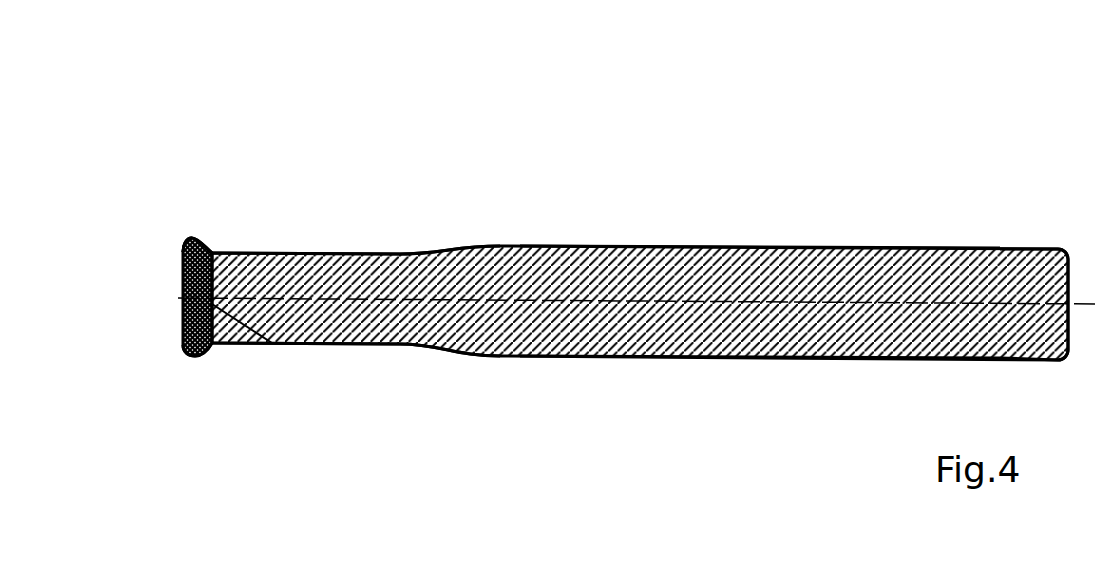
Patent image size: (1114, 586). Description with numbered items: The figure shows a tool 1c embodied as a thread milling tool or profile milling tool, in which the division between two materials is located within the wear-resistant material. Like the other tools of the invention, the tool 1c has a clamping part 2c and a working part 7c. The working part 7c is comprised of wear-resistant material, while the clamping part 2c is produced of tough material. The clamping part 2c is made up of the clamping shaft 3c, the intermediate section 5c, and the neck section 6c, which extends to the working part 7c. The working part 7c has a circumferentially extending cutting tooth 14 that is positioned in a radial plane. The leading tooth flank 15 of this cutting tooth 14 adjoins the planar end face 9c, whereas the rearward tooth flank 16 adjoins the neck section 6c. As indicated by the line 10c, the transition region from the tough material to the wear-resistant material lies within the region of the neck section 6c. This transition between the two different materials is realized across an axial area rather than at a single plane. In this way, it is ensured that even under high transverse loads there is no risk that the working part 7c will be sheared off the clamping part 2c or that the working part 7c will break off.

The tool 1c is at (715, 244).
The clamping part 2c is at (515, 260).
The clamping shaft 3c is at (958, 238).
The intermediate section 5c is at (432, 247).
The neck section 6c is at (315, 250).
The working part 7c is at (197, 240).
The planar end face 9c is at (180, 283).
The line 10c is at (272, 343).
The cutting tooth 14 is at (193, 243).
The leading tooth flank 15 is at (190, 350).
The rearward tooth flank 16 is at (200, 350).